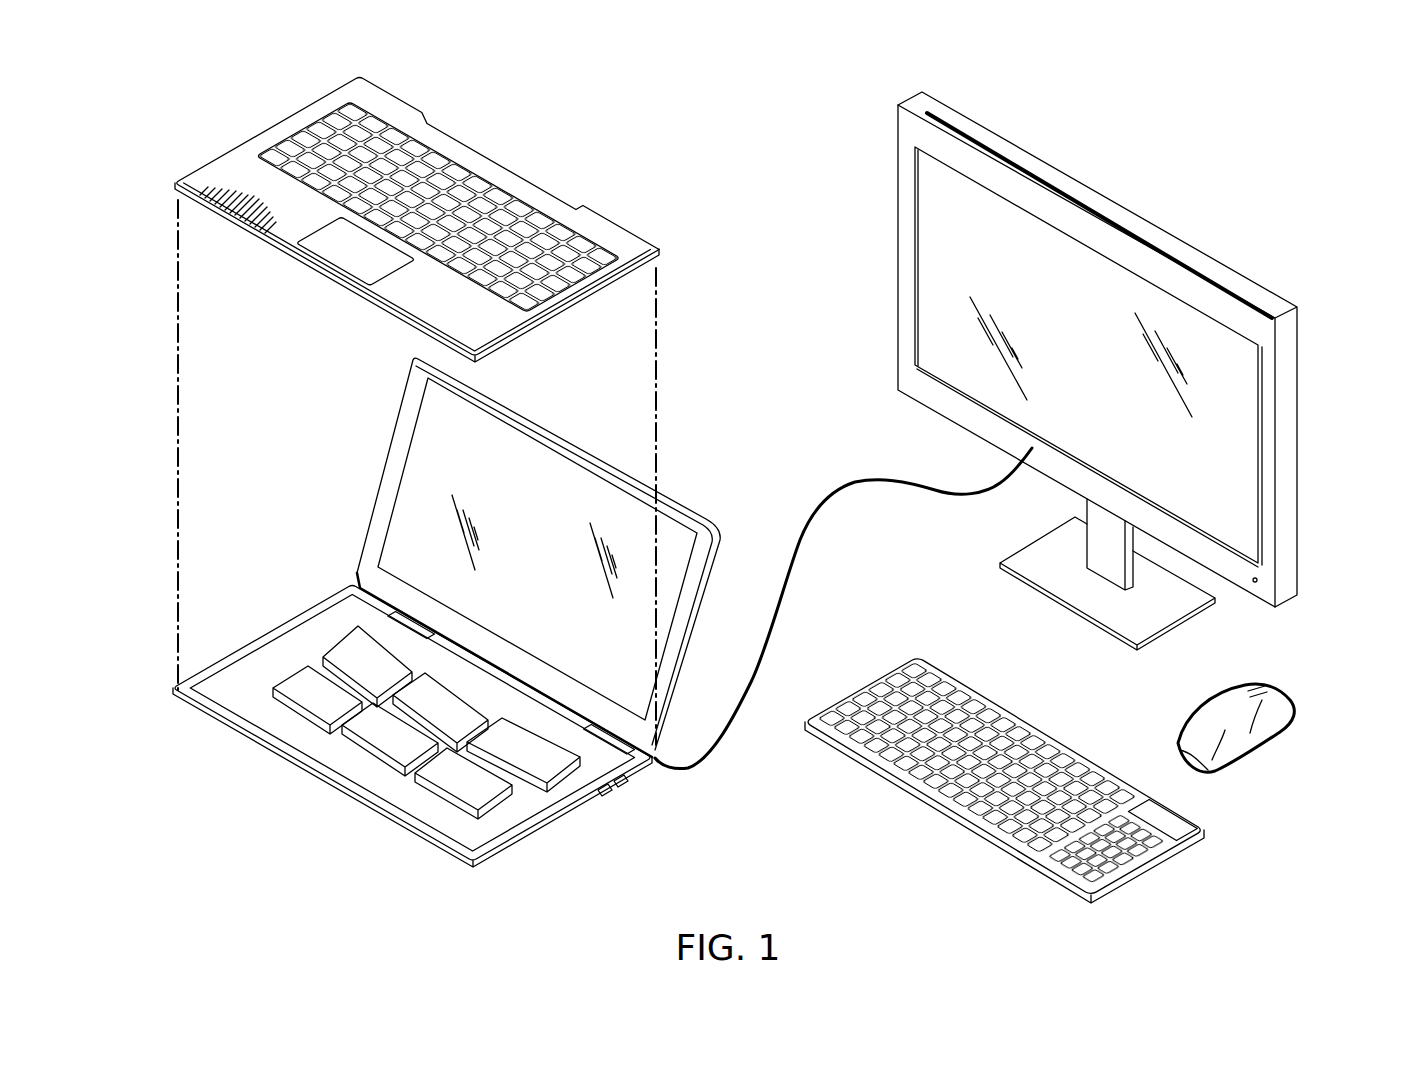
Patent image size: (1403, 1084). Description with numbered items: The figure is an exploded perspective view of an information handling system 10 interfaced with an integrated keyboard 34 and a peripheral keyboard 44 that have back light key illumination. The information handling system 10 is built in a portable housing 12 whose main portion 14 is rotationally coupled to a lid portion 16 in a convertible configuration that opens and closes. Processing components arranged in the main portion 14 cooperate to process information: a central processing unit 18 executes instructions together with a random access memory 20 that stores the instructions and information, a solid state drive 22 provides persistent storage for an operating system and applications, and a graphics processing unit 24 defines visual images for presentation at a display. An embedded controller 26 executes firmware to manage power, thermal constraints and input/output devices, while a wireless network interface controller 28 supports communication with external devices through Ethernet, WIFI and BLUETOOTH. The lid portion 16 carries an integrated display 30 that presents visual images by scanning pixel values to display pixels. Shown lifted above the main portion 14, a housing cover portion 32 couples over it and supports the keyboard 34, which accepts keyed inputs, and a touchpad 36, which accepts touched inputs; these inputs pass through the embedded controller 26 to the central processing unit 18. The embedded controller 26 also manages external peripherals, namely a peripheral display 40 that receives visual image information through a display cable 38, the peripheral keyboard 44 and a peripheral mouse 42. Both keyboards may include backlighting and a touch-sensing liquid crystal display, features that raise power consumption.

The information handling system 10 is at (735, 191).
The portable housing 12 is at (400, 833).
The main portion 14 is at (210, 720).
The lid portion 16 is at (692, 512).
The central processing unit (CPU) 18 is at (340, 656).
The random access memory (RAM) 20 is at (288, 686).
The solid state drive (SSD) 22 is at (493, 780).
The graphics processing unit (GPU) 24 is at (473, 712).
The embedded controller 26 is at (543, 752).
The wireless network interface controller (WNIC) 28 is at (380, 748).
The integrated display 30 is at (402, 507).
The housing cover portion 32 is at (223, 162).
The integrated keyboard 34 is at (517, 192).
The touchpad 36 is at (373, 262).
The display cable 38 is at (860, 486).
The peripheral display 40 is at (1097, 263).
The peripheral mouse 42 is at (1277, 735).
The peripheral keyboard 44 is at (945, 825).